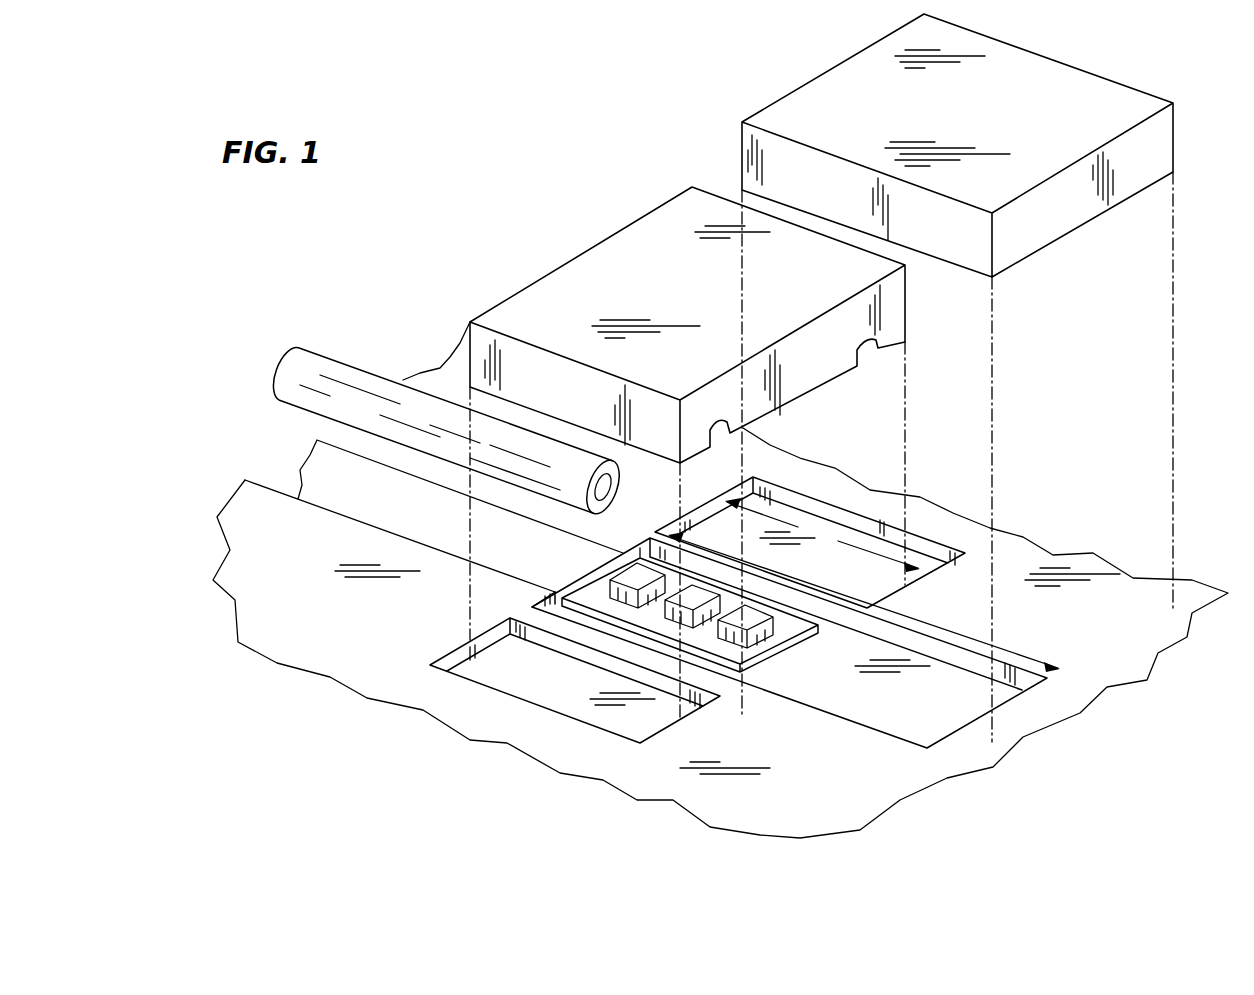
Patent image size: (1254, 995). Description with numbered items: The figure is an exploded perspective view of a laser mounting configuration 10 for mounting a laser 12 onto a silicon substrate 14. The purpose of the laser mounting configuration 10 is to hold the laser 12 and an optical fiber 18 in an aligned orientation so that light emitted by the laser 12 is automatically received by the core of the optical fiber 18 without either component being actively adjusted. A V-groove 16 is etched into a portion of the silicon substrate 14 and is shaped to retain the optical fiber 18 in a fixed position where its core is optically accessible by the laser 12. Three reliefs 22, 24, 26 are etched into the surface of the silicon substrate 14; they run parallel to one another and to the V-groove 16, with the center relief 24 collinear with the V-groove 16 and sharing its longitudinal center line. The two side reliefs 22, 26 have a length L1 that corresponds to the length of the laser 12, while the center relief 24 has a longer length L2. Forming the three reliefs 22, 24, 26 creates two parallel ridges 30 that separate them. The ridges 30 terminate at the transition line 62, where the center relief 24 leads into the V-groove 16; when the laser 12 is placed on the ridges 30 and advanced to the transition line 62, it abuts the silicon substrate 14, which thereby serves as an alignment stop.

The laser mounting configuration 10 is at (510, 138).
The laser 12 is at (583, 252).
The silicon substrate 14 is at (235, 600).
The V-groove 16 is at (356, 512).
The optical fiber 18 is at (360, 360).
The side relief 22 is at (577, 507).
The center relief 24 is at (886, 718).
The side relief 26 is at (883, 590).
The ridges 30 is at (766, 556).
The transition line 62 is at (625, 560).
The length of the side reliefs L1 is at (822, 535).
The length of the center relief L2 is at (1008, 653).